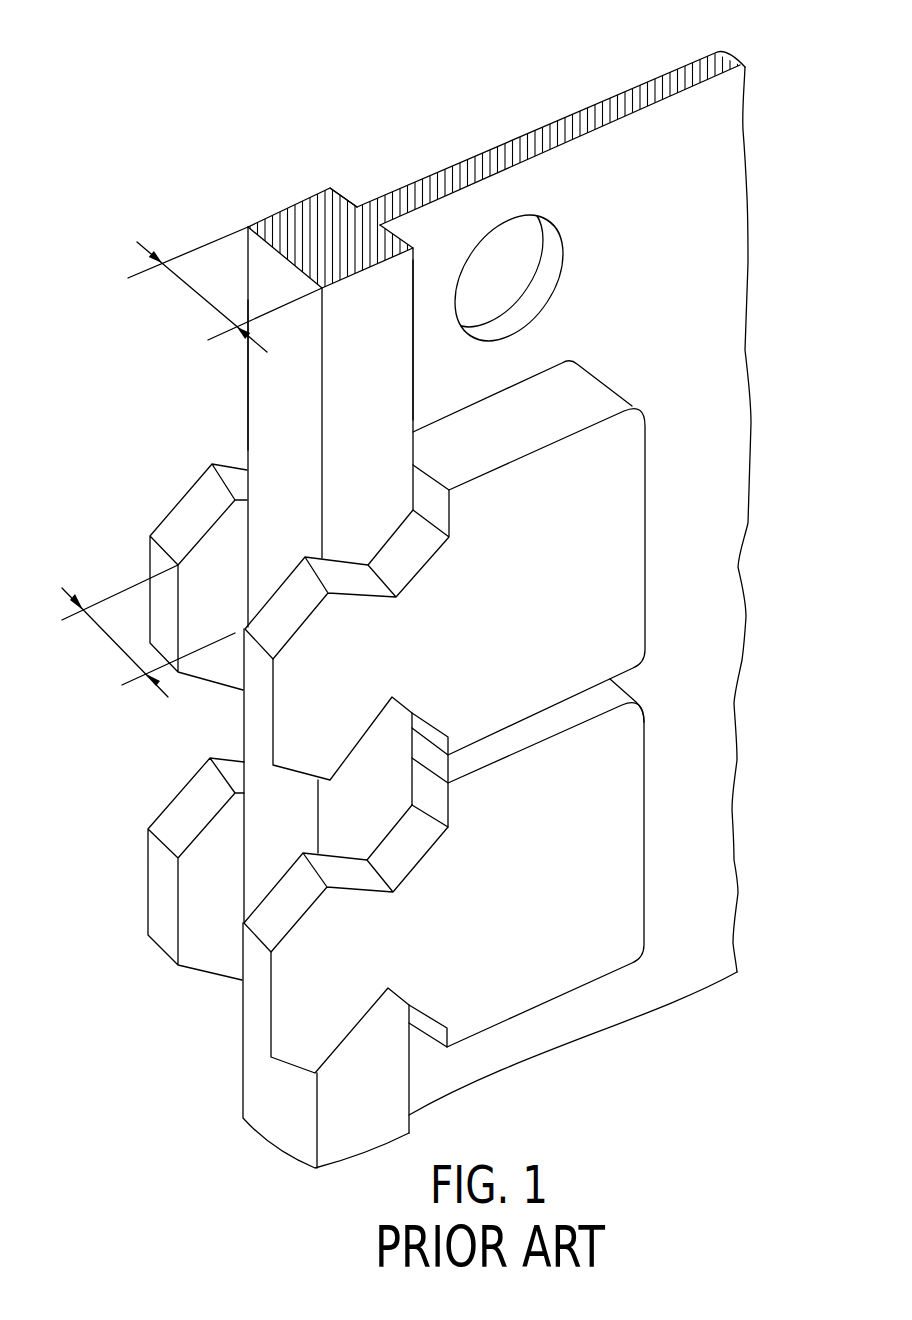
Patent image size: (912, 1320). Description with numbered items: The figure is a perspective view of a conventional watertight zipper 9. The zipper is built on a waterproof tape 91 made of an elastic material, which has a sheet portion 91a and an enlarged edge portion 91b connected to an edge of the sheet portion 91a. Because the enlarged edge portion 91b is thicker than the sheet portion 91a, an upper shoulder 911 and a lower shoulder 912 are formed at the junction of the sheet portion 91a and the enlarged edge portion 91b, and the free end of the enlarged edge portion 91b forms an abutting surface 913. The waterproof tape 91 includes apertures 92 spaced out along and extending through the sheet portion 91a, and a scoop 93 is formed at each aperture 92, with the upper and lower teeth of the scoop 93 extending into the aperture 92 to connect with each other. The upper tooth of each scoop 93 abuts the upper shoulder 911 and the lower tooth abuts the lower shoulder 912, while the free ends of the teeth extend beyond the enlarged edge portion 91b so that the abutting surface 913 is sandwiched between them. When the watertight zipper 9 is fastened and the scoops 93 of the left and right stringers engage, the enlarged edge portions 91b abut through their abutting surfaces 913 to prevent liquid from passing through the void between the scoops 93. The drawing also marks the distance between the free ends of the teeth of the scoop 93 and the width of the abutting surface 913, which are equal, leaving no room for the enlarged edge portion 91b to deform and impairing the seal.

The watertight zipper 9 is at (233, 207).
The waterproof tape 91 is at (425, 45).
The sheet portion 91a is at (480, 168).
The enlarged edge portion 91b is at (307, 212).
The upper shoulder 911 is at (408, 240).
The lower shoulder 912 is at (347, 197).
The abutting surface 913 is at (275, 368).
The aperture 92 is at (543, 223).
The scoop 93 is at (623, 458).